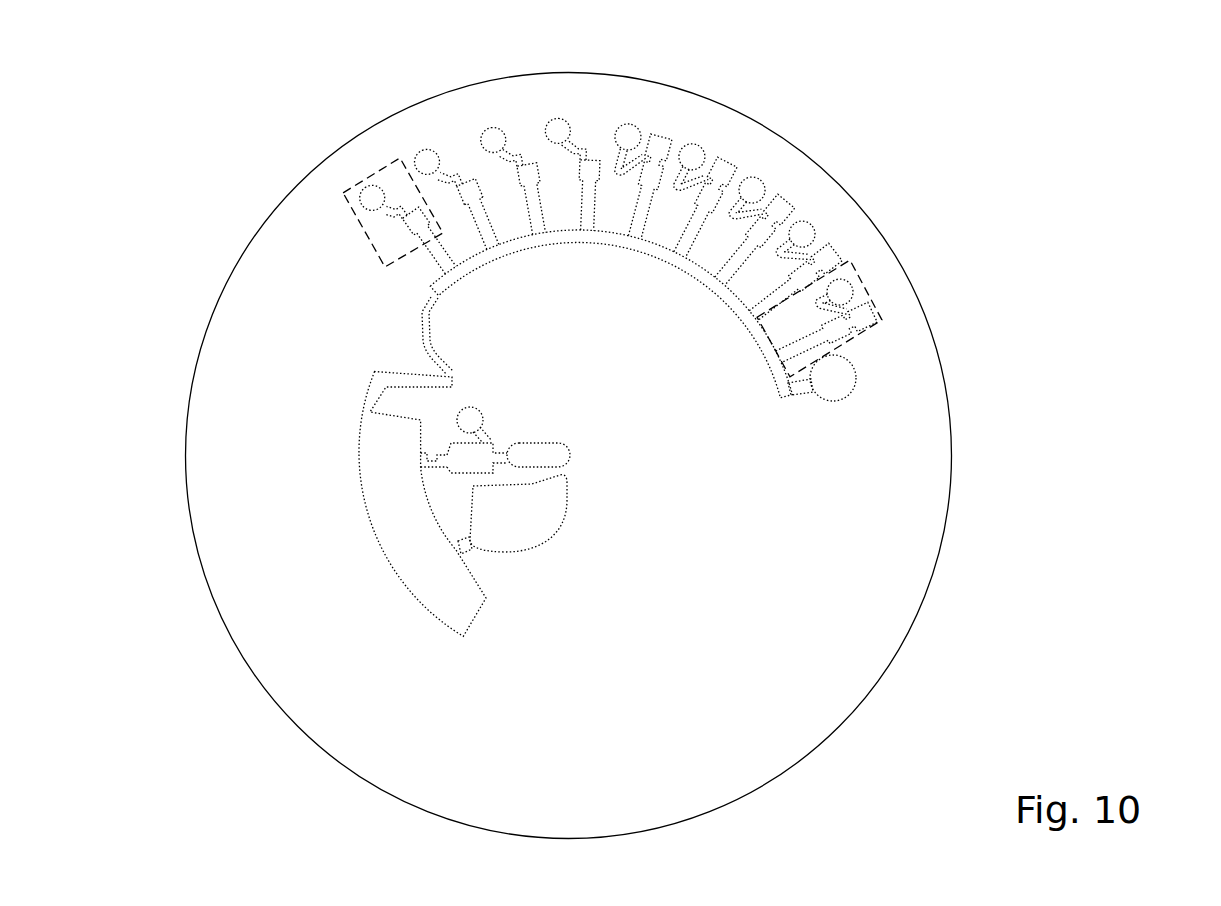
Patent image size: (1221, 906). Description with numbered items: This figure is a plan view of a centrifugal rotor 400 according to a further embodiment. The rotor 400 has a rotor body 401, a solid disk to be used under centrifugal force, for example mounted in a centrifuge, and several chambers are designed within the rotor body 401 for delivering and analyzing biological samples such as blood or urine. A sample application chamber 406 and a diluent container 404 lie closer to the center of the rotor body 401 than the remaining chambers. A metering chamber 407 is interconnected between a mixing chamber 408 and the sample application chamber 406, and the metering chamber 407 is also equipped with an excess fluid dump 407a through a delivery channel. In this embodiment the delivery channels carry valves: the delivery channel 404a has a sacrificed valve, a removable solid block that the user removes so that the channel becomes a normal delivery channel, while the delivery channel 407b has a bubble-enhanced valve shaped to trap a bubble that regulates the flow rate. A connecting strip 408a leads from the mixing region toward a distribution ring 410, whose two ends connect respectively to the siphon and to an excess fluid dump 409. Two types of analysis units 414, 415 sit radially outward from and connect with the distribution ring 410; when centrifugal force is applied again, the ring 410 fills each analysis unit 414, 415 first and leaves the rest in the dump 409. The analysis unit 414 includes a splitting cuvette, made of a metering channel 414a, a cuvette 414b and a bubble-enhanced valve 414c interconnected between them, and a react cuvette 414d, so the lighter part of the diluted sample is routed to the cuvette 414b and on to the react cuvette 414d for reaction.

The centrifugal rotor 400 is at (845, 57).
The rotor body 401 is at (860, 688).
The diluent container 404 is at (560, 521).
The delivery channel 404a is at (471, 558).
The sample application chamber 406 is at (540, 445).
The metering chamber 407 is at (467, 465).
The excess fluid dump 407a is at (471, 407).
The delivery channel 407b is at (430, 468).
The mixing chamber 408 is at (415, 588).
The connecting strip 408a is at (423, 330).
The excess fluid dump 409 is at (830, 398).
The distribution ring 410 is at (658, 259).
The analysis unit 414 is at (353, 233).
The metering channel 414a is at (493, 211).
The cuvette 414b is at (466, 176).
The bubble-enhanced valve 414c is at (483, 182).
The react cuvette 414d is at (429, 164).
The analysis unit 415 is at (866, 285).